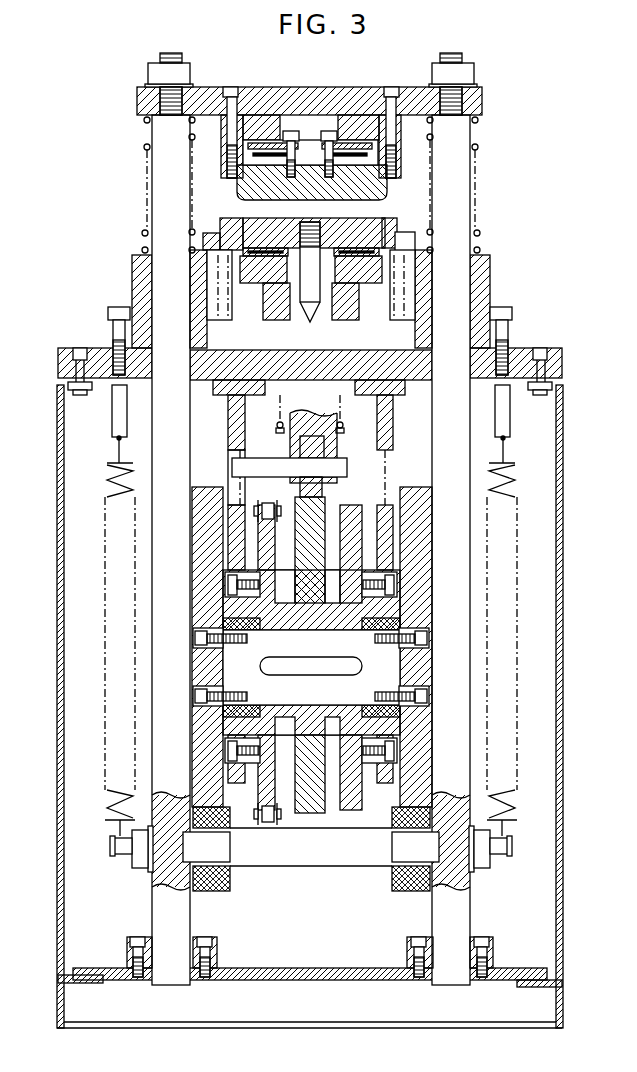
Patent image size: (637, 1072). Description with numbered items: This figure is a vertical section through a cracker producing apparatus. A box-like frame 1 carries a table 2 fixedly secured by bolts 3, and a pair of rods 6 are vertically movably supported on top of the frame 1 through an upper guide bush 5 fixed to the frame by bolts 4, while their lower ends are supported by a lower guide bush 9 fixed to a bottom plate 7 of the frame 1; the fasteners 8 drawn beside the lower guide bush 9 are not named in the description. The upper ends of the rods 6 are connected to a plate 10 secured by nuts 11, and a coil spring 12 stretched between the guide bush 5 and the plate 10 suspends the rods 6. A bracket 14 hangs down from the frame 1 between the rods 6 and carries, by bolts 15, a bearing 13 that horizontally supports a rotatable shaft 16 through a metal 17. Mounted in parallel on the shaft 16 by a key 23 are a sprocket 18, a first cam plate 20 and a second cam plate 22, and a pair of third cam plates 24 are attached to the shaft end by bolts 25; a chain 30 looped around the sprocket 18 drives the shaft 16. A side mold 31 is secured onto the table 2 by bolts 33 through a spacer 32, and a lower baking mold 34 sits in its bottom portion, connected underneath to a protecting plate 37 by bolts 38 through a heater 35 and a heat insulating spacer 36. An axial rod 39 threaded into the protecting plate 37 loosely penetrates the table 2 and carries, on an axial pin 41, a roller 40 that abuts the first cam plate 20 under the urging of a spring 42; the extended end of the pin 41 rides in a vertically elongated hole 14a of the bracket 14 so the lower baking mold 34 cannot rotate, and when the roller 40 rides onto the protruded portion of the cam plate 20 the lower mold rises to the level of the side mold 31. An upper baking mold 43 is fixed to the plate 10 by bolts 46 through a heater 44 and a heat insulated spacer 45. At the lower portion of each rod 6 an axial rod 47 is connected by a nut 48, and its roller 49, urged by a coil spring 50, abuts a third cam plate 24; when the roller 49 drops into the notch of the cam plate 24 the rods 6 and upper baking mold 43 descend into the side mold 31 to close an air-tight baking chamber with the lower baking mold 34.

The box-like frame 1 is at (58, 407).
The table 2 is at (97, 352).
The bolts 3 is at (75, 350).
The bolts 4 is at (117, 308).
The upper guide bush 5 is at (133, 270).
The rods 6 is at (162, 181).
The bottom plate 7 is at (315, 968).
The bolt 8 is at (205, 940).
The lower guide bush 9 is at (215, 952).
The plate 10 is at (333, 90).
The nuts 11 is at (153, 72).
The coil spring 12 is at (144, 147).
The bearing 13 is at (395, 607).
The bracket 14 is at (236, 428).
The vertically elongated hole 14a is at (236, 482).
The bolts 15 is at (225, 584).
The rotatable shaft 16 is at (395, 660).
The metal 17 is at (222, 624).
The sprocket 18 is at (268, 544).
The first cam plate 20 is at (298, 580).
The second cam plate 22 is at (350, 508).
The key 23 is at (327, 660).
The third cam plates 24 is at (194, 520).
The bolts 25 is at (428, 638).
The chain 30 is at (264, 503).
The side mold 31 is at (230, 218).
The spacer 32 is at (241, 288).
The bolts 33 is at (231, 306).
The lower baking mold 34 is at (344, 220).
The heater 35 is at (396, 226).
The heat insulating spacer 36 is at (365, 283).
The protecting plate 37 is at (355, 312).
The bolts 38 is at (311, 324).
The axial rod 39 is at (301, 402).
The roller 40 is at (327, 450).
The axial pin 41 is at (258, 460).
The spring 42 is at (344, 424).
The upper baking mold 43 is at (383, 190).
The heater 44 is at (376, 152).
The heat insulated spacer 45 is at (363, 118).
The bolts 46 is at (235, 87).
The axial rod 47 is at (352, 862).
The nut 48 is at (138, 868).
The roller 49 is at (215, 888).
The coil spring 50 is at (118, 800).